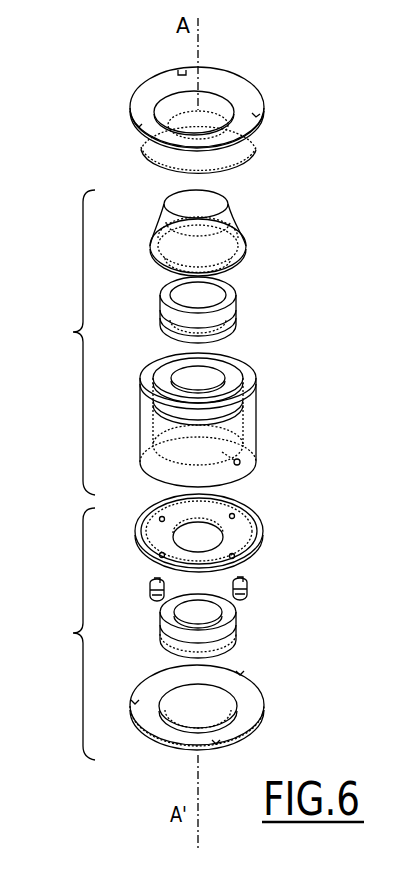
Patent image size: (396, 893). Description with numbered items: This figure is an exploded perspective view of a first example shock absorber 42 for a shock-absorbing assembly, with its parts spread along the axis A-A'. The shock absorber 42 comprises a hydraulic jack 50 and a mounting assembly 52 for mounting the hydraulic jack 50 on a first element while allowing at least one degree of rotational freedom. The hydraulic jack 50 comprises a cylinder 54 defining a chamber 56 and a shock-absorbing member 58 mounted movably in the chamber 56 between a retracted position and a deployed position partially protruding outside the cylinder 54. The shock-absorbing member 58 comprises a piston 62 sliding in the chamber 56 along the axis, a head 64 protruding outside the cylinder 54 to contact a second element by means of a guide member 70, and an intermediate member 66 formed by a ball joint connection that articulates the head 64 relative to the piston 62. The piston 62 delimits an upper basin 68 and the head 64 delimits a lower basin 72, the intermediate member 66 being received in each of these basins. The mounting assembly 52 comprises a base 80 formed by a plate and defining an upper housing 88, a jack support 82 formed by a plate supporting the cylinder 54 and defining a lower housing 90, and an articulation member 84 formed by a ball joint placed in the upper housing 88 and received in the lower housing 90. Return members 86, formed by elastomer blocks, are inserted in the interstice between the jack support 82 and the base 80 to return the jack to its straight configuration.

The shock absorber 42 is at (104, 152).
The shock-absorbing member 58 is at (266, 172).
The guide member 70 is at (228, 88).
The hydraulic jack 50 is at (71, 342).
The head 64 is at (243, 240).
The lower basin 72 is at (173, 252).
The intermediate member 66 is at (240, 290).
The piston 62 is at (232, 370).
The upper basin 68 is at (182, 378).
The chamber 56 is at (245, 413).
The cylinder 54 is at (258, 436).
The mounting assembly 52 is at (71, 634).
The jack support 82 is at (262, 534).
The lower housing 90 is at (172, 540).
The return member 86 is at (150, 590).
The articulation member 84 is at (256, 632).
The base 80 is at (265, 710).
The upper housing 88 is at (180, 722).